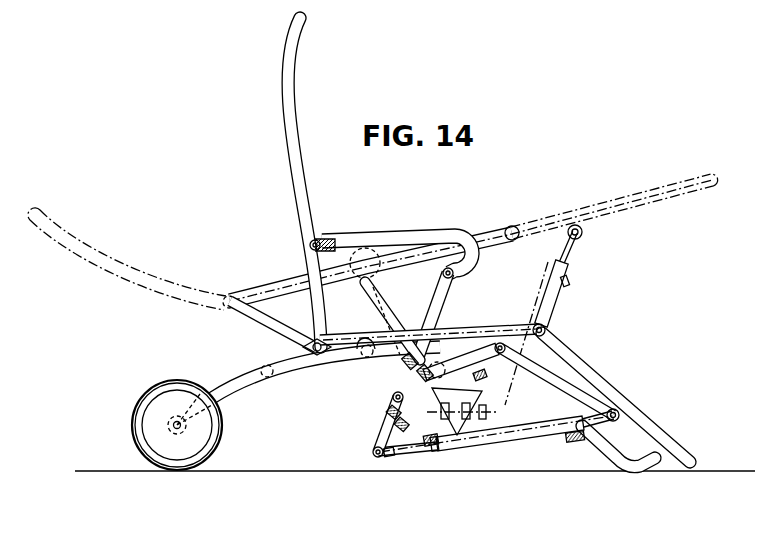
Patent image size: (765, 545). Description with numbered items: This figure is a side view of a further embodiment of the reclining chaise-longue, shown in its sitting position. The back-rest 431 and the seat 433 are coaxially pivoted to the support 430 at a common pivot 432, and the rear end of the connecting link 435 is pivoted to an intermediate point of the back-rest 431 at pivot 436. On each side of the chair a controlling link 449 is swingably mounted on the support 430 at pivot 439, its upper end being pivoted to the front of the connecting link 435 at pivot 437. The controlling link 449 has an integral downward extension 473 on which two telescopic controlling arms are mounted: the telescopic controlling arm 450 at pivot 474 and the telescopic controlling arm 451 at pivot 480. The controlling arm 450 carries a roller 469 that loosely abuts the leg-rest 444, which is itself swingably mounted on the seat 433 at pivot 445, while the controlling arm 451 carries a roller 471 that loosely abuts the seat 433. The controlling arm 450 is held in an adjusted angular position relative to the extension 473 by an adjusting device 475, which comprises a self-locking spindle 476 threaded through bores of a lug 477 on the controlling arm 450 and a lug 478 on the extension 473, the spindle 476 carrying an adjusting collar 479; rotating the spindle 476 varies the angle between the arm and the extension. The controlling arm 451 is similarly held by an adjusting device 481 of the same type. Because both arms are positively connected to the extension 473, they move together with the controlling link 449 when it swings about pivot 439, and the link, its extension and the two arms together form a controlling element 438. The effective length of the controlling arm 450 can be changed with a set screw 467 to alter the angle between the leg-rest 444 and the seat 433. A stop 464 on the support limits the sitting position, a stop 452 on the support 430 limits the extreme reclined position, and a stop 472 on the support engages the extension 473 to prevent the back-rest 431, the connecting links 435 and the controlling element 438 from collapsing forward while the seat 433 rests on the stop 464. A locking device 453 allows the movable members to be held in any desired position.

The support 430 is at (243, 401).
The back-rest 431 is at (291, 95).
The pivot 432 is at (302, 357).
The seat 433 is at (473, 327).
The connecting link 435 is at (412, 233).
The pivot 436 is at (310, 243).
The pivot 437 is at (453, 236).
The controlling element 438 is at (416, 312).
The pivot 439 is at (464, 362).
The leg-rest 444 is at (603, 378).
The pivot 445 is at (546, 328).
The controlling link 449 is at (443, 274).
The telescopic controlling arm 450 is at (500, 440).
The telescopic controlling arm 451 is at (491, 326).
The stop 452 is at (300, 346).
The locking device 453 is at (329, 238).
The stop 464 is at (356, 360).
The set screw 467 is at (576, 442).
The roller 469 is at (620, 416).
The roller 471 is at (503, 352).
The stop 472 is at (395, 370).
The downward extension 473 is at (383, 443).
The pivot 474 is at (375, 458).
The adjusting device 475 is at (437, 452).
The spindle 476 is at (385, 410).
The lug 477 is at (420, 450).
The lug 478 is at (392, 425).
The adjusting collar 479 is at (383, 457).
The pivot 480 is at (393, 398).
The adjusting device 481 is at (462, 407).